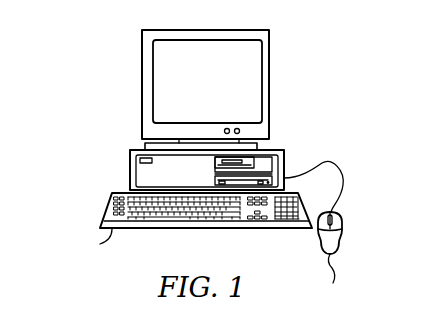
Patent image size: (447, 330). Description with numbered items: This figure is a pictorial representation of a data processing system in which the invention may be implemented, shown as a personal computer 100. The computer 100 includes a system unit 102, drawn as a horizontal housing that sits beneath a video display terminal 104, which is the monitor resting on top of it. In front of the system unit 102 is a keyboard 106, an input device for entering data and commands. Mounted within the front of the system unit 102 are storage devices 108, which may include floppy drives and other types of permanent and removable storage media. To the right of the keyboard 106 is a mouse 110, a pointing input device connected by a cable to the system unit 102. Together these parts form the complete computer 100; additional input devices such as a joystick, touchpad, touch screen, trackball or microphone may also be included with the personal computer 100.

The computer 100 is at (82, 73).
The system unit 102 is at (130, 166).
The video display terminal 104 is at (269, 85).
The keyboard 106 is at (122, 229).
The storage devices 108 is at (268, 165).
The mouse 110 is at (322, 235).